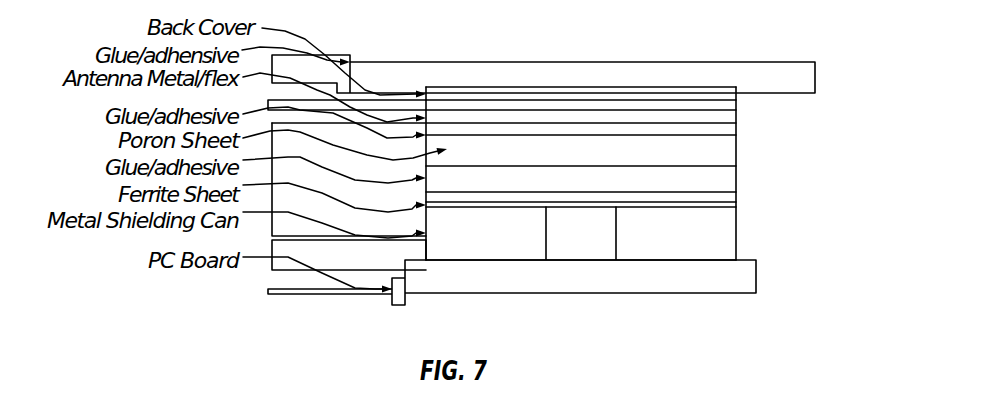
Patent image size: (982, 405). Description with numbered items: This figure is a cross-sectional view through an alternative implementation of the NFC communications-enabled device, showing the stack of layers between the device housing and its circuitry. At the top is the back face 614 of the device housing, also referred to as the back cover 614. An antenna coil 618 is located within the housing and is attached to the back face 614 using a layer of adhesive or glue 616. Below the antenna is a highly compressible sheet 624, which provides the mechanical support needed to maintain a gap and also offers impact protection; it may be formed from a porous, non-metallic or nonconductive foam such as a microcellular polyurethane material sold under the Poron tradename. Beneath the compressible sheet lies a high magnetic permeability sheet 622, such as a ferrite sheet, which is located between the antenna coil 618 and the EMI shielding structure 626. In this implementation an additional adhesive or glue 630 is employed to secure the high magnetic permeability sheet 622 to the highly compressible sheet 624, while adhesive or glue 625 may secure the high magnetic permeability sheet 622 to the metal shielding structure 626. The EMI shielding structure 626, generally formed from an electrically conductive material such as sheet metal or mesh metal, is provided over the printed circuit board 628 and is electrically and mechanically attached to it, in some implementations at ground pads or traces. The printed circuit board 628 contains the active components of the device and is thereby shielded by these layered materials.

The back face 614 is at (763, 75).
The adhesive or glue 616 is at (717, 92).
The antenna coil 618 is at (720, 110).
The adhesive or glue 630 is at (723, 150).
The highly compressible sheet 624 is at (723, 173).
The adhesive or glue 625 is at (720, 197).
The high magnetic permeability sheet 622 is at (720, 204).
The EMI shielding structure 626 is at (725, 228).
The printed circuit board 628 is at (742, 275).